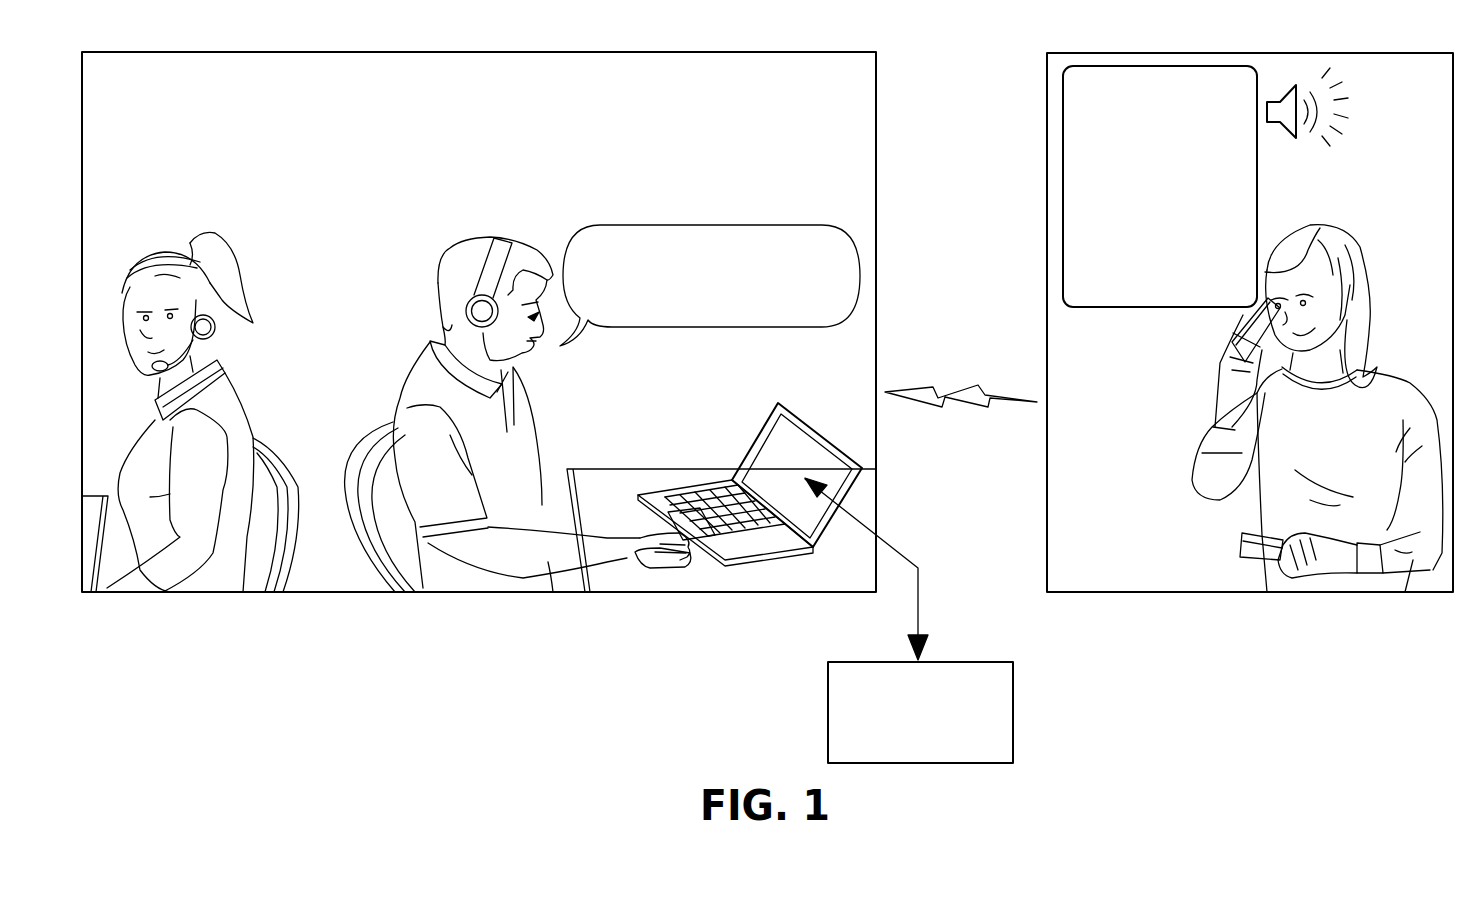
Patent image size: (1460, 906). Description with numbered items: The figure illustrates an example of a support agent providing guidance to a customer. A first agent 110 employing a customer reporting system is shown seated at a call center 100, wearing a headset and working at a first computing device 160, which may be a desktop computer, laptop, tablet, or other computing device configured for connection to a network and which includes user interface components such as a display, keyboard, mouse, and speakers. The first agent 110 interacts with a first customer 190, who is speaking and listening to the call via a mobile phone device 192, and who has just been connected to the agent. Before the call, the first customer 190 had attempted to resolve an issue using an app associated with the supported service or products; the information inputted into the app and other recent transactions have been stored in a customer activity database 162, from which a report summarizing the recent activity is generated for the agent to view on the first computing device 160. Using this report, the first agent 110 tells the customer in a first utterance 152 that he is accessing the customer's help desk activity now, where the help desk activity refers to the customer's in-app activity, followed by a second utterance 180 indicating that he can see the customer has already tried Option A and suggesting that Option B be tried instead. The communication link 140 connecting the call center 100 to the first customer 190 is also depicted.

The call center 100 is at (758, 93).
The first agent 110 is at (416, 307).
The network communication link 140 is at (955, 360).
The first utterance 152 is at (657, 225).
The first computing device 160 is at (770, 460).
The customer activity database 162 is at (1013, 715).
The second utterance 180 is at (1258, 168).
The first customer 190 is at (1172, 409).
The mobile phone device 192 is at (1222, 356).